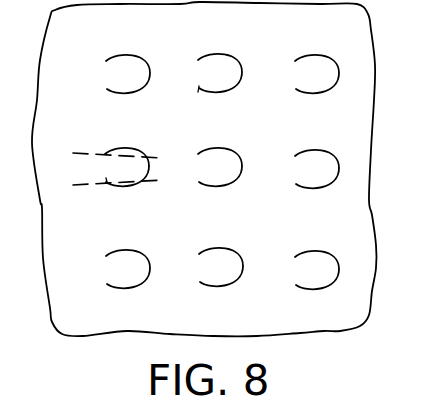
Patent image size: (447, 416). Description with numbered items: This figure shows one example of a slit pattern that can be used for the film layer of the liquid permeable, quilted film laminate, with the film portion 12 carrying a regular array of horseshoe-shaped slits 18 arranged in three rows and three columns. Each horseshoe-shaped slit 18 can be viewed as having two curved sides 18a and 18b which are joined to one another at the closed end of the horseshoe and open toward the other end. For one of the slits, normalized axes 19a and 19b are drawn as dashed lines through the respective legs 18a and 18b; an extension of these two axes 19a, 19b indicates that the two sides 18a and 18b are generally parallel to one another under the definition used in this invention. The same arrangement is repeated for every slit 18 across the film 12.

The substrate 12 is at (279, 311).
The horseshoe-shaped slit 18 is at (114, 44).
The first curved side 18a is at (220, 56).
The second curved side 18b is at (226, 93).
The first normalized axis 19a is at (78, 153).
The second normalized axis 19b is at (80, 187).